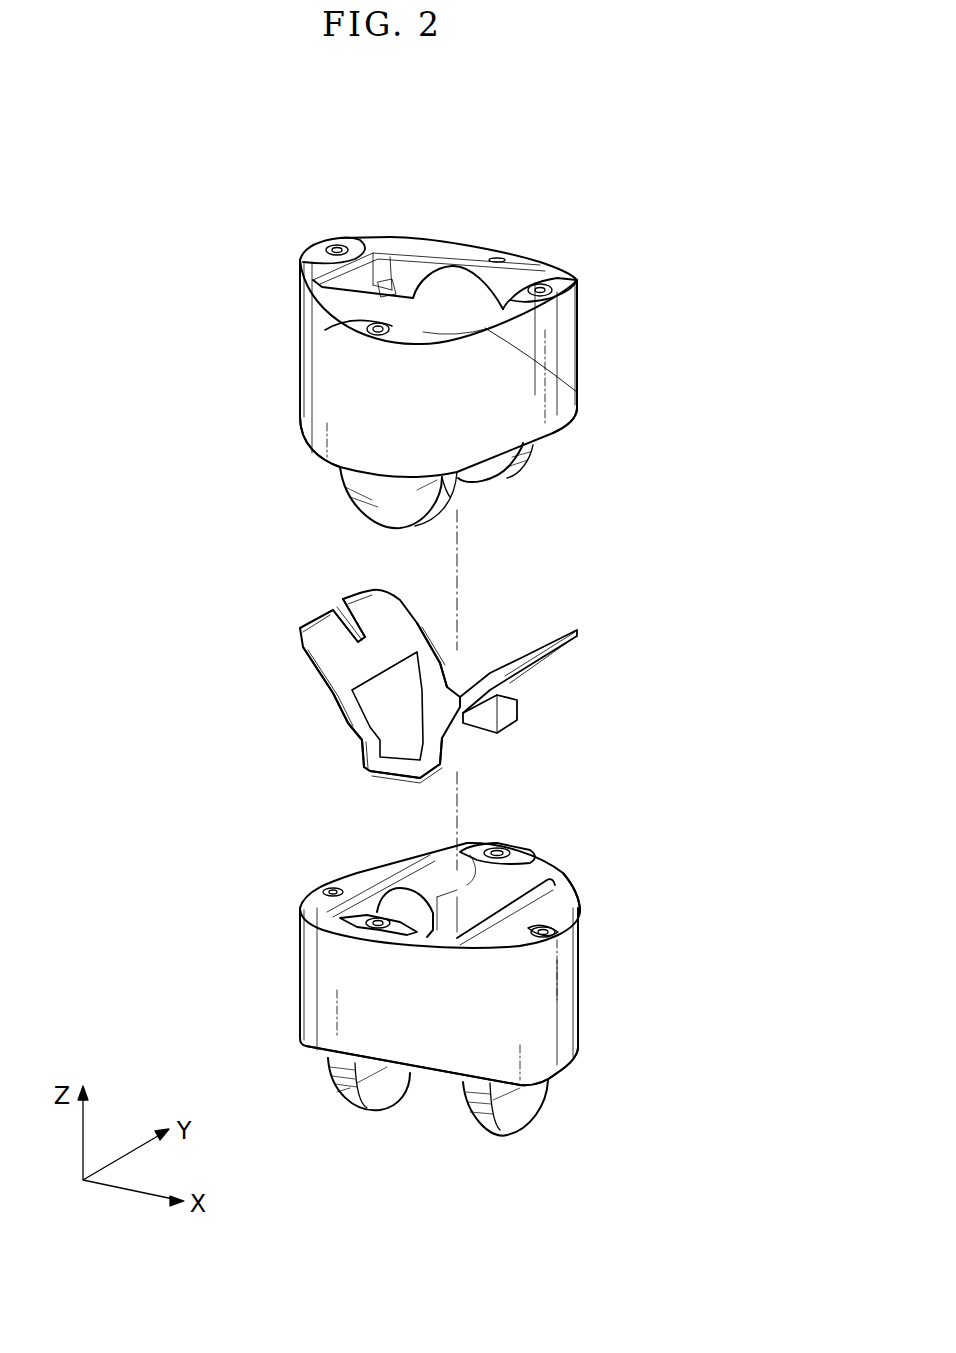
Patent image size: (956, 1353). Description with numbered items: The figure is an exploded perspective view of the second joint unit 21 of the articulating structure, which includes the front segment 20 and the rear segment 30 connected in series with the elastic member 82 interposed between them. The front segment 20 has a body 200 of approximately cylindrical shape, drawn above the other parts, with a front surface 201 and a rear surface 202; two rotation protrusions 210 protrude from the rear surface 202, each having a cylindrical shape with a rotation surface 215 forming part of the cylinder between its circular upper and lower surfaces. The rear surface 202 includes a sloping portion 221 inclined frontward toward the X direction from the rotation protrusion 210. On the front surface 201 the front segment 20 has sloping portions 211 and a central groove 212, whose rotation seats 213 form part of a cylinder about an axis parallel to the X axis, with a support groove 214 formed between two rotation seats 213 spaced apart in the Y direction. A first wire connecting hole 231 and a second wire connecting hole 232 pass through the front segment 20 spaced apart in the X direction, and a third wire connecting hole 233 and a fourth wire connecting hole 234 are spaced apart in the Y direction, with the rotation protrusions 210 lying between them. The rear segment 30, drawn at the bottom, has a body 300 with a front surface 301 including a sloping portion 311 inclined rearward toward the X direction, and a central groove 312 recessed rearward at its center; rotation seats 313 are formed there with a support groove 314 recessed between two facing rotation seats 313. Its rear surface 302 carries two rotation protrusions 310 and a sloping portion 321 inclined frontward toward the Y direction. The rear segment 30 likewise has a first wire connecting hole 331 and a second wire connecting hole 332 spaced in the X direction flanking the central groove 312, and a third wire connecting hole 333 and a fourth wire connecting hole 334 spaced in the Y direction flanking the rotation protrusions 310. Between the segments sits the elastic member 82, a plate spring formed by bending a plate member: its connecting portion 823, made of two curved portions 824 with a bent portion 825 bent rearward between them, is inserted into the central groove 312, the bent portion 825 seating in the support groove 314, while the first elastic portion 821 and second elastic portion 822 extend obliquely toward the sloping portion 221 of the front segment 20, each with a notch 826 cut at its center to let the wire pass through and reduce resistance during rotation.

The second joint unit 21 is at (138, 405).
The front segment 20 is at (300, 330).
The body 200 is at (578, 348).
The front surface 201 is at (577, 392).
The rear surface 202 is at (560, 430).
The rotation protrusion 210 is at (537, 455).
The sloping portion 211 is at (540, 280).
The central groove 212 is at (405, 277).
The rotation seat 213 is at (485, 258).
The support groove 214 is at (393, 293).
The rotation surface 215 is at (457, 497).
The sloping portion 221 is at (555, 437).
The first wire connecting hole 231 is at (337, 250).
The second wire connecting hole 232 is at (560, 265).
The third wire connecting hole 233 is at (378, 327).
The fourth wire connecting hole 234 is at (499, 258).
The elastic member 82 is at (325, 677).
The first elastic portion 821 is at (333, 645).
The second elastic portion 822 is at (503, 667).
The connecting portion 823 is at (447, 647).
The curved portion 824 is at (440, 677).
The bent portion 825 is at (387, 773).
The notch 826 is at (363, 598).
The rear segment 30 is at (300, 953).
The holder body 300 is at (578, 1008).
The front surface 301 is at (558, 893).
The rear surface 302 is at (565, 1070).
The rotation protrusion 310 is at (343, 1090).
The sloping portion 311 is at (363, 877).
The central groove 312 is at (553, 872).
The rotation seat 313 is at (390, 863).
The support groove 314 is at (467, 880).
The sloping portion 321 is at (420, 1077).
The first wire connecting hole 331 is at (333, 890).
The second wire connecting hole 332 is at (558, 926).
The third wire connecting hole 333 is at (370, 927).
The fourth wire connecting hole 334 is at (497, 853).